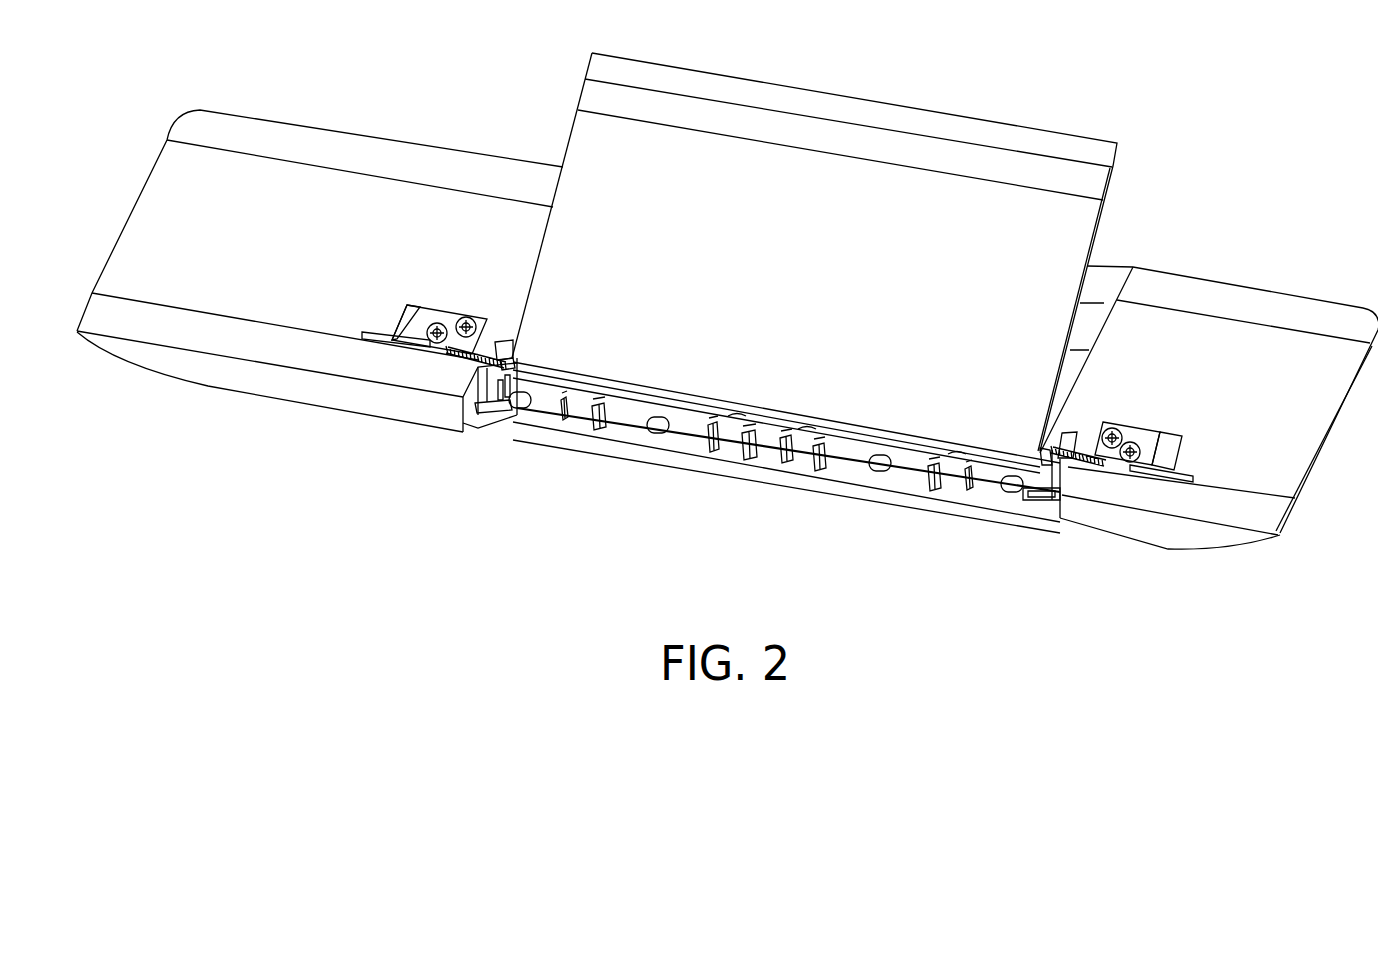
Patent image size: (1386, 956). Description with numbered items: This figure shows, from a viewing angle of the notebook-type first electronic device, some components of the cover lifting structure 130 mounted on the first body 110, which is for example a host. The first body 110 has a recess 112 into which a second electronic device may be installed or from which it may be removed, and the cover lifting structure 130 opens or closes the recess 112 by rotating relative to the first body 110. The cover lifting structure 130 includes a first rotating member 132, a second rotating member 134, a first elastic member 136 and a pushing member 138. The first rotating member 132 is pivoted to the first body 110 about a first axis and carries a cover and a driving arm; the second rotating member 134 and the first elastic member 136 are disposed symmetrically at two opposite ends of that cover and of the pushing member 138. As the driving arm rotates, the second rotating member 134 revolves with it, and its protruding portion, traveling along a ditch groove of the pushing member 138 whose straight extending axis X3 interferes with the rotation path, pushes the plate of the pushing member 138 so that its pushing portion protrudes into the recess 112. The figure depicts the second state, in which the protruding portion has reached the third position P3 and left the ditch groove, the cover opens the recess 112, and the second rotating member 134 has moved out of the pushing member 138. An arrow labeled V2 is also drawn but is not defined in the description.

The first body 110 is at (459, 155).
The recess 112 is at (1084, 318).
The cover lifting structure 130 is at (742, 448).
The first rotating member 132 is at (647, 360).
The second rotating member 134 is at (499, 453).
The first elastic member 136 is at (460, 410).
The pushing member 138 is at (582, 400).
The third position P3 is at (507, 354).
The extending axis X3 is at (420, 429).
The moving direction V2 is at (845, 517).